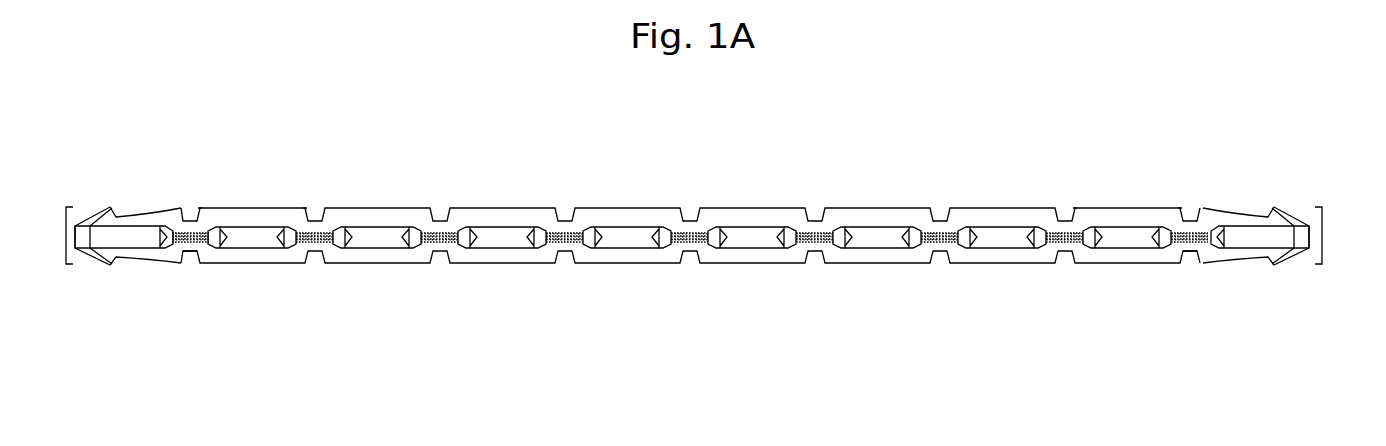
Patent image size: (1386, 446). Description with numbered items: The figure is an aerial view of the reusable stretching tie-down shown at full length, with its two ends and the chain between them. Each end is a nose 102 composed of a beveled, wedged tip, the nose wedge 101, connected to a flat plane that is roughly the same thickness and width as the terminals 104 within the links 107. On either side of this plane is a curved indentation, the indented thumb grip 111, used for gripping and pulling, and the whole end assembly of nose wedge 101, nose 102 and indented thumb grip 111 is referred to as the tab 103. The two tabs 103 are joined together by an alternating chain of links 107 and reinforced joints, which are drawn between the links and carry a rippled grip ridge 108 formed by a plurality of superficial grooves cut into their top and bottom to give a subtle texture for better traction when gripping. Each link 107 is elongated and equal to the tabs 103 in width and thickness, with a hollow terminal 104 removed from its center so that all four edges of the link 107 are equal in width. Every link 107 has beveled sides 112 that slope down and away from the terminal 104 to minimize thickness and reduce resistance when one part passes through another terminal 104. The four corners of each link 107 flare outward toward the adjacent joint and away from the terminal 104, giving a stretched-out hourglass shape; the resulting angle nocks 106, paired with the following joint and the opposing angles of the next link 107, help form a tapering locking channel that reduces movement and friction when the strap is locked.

The nose wedge 101 is at (83, 237).
The nose 102 is at (66, 237).
The tab 103 is at (122, 236).
The terminal 104 is at (254, 238).
The angle nocks 106 is at (204, 260).
The link 107 is at (198, 203).
The rippled grip ridge 108 is at (192, 245).
The indented thumb grip 111 is at (125, 263).
The beveled side 112 is at (272, 263).